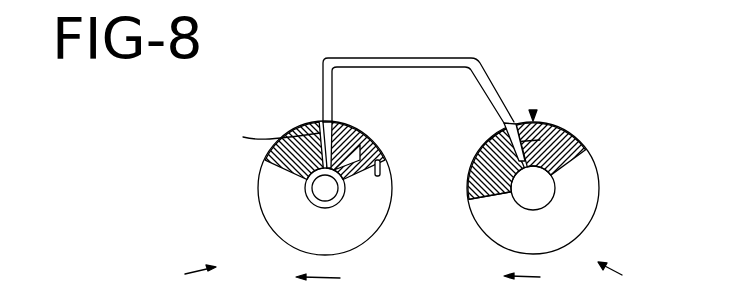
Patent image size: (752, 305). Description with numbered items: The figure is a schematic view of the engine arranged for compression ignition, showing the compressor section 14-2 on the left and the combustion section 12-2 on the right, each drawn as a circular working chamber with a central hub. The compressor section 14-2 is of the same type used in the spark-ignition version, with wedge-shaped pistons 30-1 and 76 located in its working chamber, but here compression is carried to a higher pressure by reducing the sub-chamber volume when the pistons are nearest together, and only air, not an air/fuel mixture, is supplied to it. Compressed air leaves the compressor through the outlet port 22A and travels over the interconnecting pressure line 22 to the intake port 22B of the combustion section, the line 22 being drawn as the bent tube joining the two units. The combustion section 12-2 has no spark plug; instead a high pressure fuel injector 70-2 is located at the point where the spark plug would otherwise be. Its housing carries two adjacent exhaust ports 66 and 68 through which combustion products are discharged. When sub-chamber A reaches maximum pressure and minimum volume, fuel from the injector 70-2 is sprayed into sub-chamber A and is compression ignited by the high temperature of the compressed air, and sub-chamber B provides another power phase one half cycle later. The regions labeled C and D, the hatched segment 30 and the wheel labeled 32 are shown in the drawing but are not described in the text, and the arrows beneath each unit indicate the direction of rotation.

The interconnecting pressure line 22 is at (373, 58).
The outlet port 22A is at (324, 123).
The intake port 22B is at (500, 113).
The wedge-shaped piston 76 is at (343, 123).
The wedge-shaped piston 30-1 is at (263, 164).
The hatched segment 30 is at (483, 202).
The wheel 32 is at (598, 181).
The exhaust port 68 is at (493, 132).
The exhaust port 66 is at (470, 166).
The high pressure fuel injector 70-2 is at (533, 112).
The compressor section 14-2 is at (170, 274).
The combustion section 12-2 is at (637, 274).
The sub-chamber A is at (550, 128).
The sub-chamber B is at (575, 240).
The region C is at (272, 140).
The wheel D is at (338, 244).